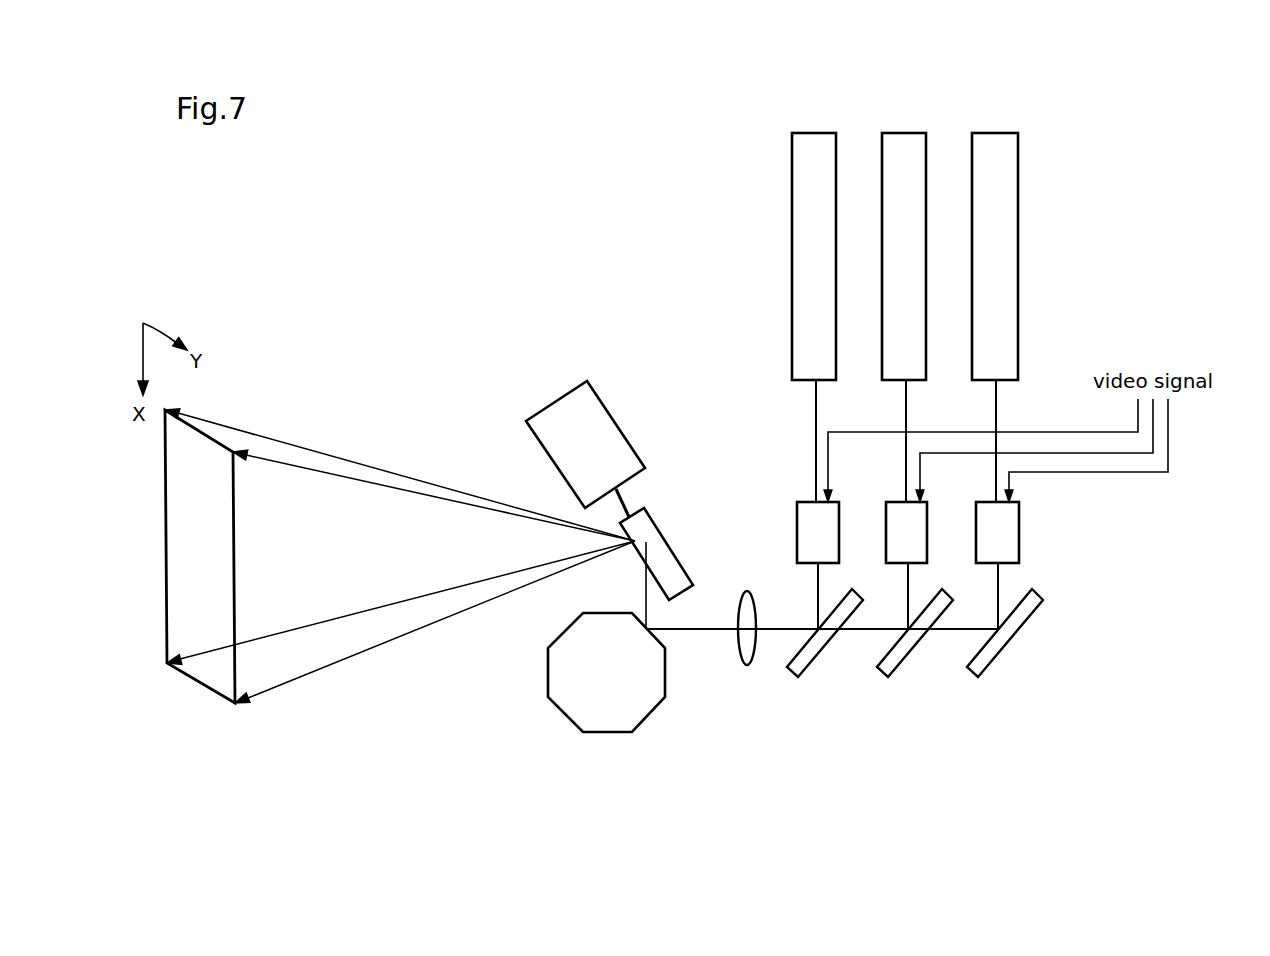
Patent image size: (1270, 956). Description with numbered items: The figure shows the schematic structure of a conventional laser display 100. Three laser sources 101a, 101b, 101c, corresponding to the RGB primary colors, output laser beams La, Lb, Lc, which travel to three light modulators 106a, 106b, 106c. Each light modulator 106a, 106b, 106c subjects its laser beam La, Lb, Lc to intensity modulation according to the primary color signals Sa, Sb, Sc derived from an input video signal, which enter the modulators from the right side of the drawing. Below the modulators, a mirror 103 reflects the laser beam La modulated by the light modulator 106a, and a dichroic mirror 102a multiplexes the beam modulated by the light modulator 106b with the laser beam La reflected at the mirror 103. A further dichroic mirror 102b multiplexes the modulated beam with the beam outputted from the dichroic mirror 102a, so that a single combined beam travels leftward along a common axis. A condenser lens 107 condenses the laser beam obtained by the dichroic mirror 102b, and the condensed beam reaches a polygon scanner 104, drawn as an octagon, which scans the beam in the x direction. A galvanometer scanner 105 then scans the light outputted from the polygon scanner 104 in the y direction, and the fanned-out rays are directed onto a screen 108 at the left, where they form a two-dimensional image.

The laser display 100 is at (1136, 720).
The laser source 101a is at (999, 131).
The laser source 101b is at (907, 131).
The laser source 101c is at (815, 131).
The dichroic mirror 102a is at (890, 674).
The dichroic mirror 102b is at (800, 674).
The mirror 103 is at (980, 674).
The polygon scanner 104 is at (598, 735).
The galvanometer scanner 105 is at (597, 392).
The light modulator 106a is at (1019, 524).
The light modulator 106b is at (894, 502).
The light modulator 106c is at (797, 516).
The condenser lens 107 is at (747, 665).
The screen 108 is at (233, 503).
The laser beam La is at (996, 415).
The laser beam Lb is at (906, 415).
The laser beam Lc is at (816, 415).
The primary color signal Sa is at (1168, 467).
The primary color signal Sb is at (1153, 440).
The primary color signal Sc is at (1138, 416).